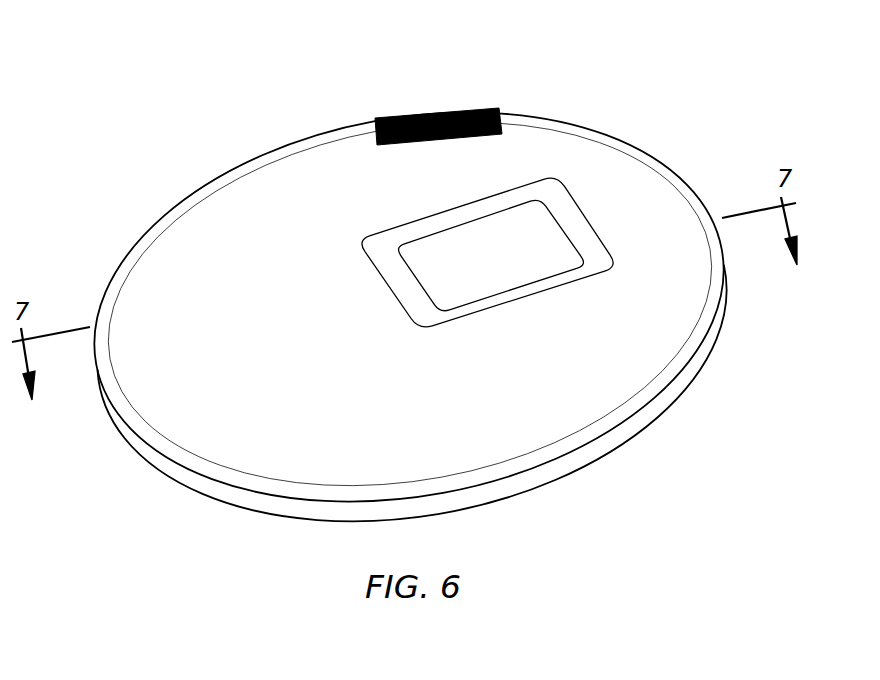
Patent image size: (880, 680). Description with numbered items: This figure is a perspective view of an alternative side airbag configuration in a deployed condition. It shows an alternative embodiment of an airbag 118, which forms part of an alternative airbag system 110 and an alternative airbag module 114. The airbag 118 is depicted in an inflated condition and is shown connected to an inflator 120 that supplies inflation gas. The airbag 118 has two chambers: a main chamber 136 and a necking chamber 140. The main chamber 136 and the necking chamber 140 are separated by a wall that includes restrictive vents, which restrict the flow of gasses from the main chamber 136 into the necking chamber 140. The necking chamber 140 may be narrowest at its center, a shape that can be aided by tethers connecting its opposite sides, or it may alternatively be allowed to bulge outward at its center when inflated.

The airbag system 110 is at (158, 68).
The airbag module 114 is at (310, 128).
The airbag 118 is at (637, 148).
The inflator 120 is at (457, 112).
The main chamber 136 is at (573, 357).
The necking chamber 140 is at (502, 243).